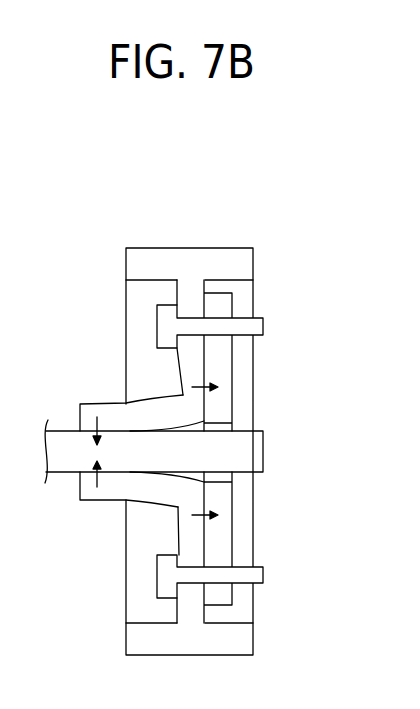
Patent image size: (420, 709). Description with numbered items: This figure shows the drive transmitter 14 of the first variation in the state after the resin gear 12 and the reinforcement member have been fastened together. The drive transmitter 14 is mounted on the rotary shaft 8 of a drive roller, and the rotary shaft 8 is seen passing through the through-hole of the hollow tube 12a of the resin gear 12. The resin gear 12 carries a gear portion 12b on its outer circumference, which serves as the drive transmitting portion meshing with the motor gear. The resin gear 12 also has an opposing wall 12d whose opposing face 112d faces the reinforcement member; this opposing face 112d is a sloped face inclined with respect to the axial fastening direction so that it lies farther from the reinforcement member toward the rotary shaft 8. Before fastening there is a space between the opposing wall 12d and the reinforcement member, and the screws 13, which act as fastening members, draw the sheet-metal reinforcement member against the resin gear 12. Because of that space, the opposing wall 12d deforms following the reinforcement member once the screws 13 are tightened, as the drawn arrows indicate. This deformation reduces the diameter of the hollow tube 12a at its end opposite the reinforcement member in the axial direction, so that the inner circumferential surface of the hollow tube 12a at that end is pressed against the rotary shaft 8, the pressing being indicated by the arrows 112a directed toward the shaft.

The drive transmitter 14 is at (279, 199).
The resin gear 12 is at (105, 335).
The hollow tube 12a is at (105, 404).
The gear portion 12b is at (217, 249).
The opposing wall 12d is at (180, 297).
The screw 13 is at (263, 327).
The rotary shaft 8 is at (263, 458).
The pressing direction of arm portion 112a is at (135, 442).
The opposing face 112d is at (205, 368).